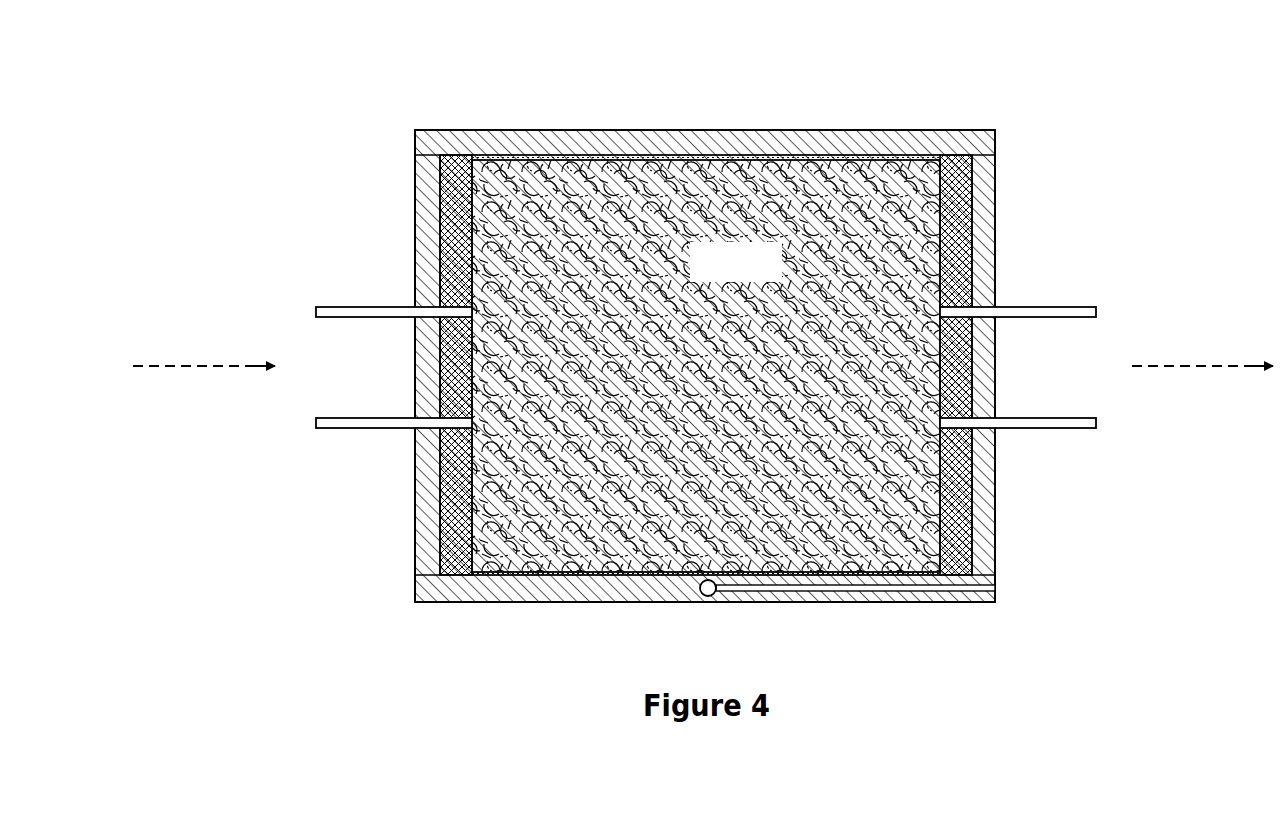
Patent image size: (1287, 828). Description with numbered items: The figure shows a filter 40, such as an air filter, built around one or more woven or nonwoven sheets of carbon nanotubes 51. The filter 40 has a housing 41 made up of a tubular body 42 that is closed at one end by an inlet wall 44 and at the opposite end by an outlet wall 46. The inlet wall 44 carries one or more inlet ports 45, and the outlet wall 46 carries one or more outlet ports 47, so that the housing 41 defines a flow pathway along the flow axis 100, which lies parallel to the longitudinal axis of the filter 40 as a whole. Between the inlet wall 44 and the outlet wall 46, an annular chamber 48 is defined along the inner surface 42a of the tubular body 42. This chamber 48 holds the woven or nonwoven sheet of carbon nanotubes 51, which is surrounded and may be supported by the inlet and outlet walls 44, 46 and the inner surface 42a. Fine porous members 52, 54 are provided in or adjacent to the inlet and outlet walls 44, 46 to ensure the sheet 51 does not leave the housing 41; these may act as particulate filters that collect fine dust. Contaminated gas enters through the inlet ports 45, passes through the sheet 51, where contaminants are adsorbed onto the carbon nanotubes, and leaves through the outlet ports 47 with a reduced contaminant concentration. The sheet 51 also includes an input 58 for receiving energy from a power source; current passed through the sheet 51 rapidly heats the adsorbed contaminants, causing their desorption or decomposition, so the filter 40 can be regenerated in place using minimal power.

The filter 40 is at (495, 55).
The housing 41 is at (535, 632).
The body 42 is at (775, 135).
The inner surface 42a is at (663, 158).
The inlet wall 44 is at (415, 160).
The inlet port 45 is at (352, 307).
The outlet wall 46 is at (995, 148).
The outlet port 47 is at (1050, 307).
The annular chamber 48 is at (415, 597).
The woven or nonwoven sheet of carbon nanotubes 51 is at (755, 274).
The fine porous member 52 is at (478, 158).
The fine porous member 54 is at (968, 140).
The input 58 is at (963, 592).
The flow axis 100 is at (165, 365).